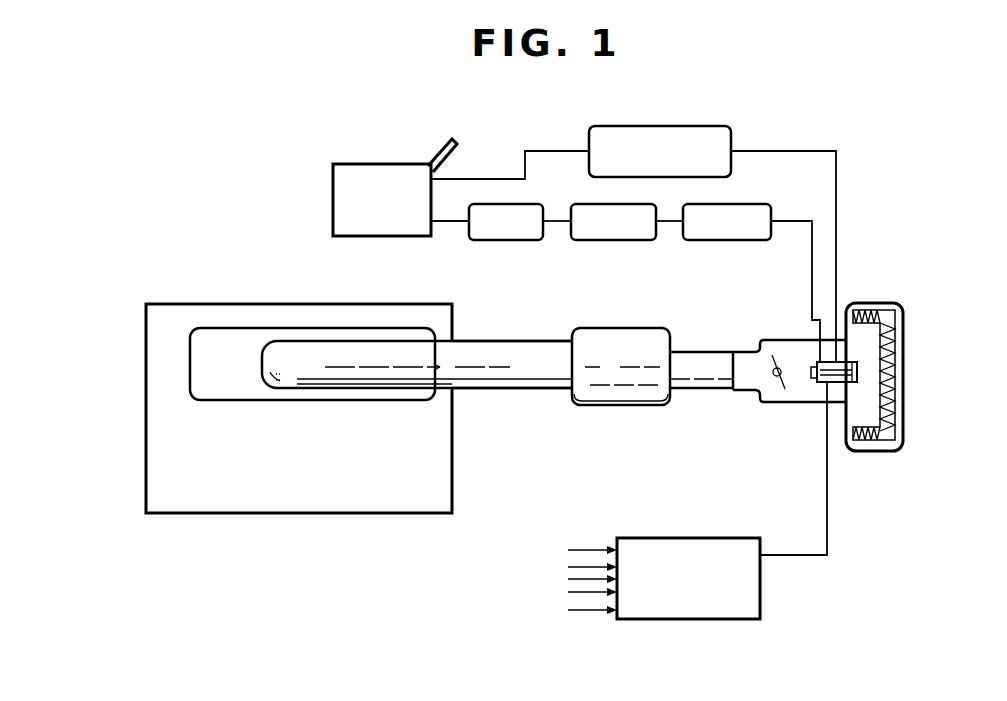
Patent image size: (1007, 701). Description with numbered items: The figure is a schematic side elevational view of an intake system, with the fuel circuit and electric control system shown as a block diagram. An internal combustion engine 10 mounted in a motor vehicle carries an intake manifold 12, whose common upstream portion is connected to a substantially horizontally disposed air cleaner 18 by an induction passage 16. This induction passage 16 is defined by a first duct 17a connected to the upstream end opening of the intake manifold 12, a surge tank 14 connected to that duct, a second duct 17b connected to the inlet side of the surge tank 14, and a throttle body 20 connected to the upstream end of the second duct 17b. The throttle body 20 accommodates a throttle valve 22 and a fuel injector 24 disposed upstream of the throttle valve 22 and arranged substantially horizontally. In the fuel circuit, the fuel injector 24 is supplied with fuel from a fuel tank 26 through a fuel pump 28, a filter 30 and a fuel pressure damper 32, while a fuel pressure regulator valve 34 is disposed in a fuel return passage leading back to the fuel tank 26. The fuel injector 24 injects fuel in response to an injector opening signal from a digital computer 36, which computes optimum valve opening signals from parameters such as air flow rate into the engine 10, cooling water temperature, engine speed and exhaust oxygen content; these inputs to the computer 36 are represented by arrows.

The internal combustion engine 10 is at (210, 304).
The intake manifold 12 is at (397, 328).
The surge tank 14 is at (620, 405).
The induction passage 16 is at (493, 355).
The first duct 17a is at (548, 340).
The second duct 17b is at (695, 352).
The air cleaner 18 is at (884, 303).
The throttle body 20 is at (781, 340).
The throttle valve 22 is at (783, 392).
The fuel injector 24 is at (820, 383).
The fuel tank 26 is at (397, 164).
The fuel pump 28 is at (516, 240).
The filter 30 is at (630, 240).
The fuel pressure damper 32 is at (742, 240).
The fuel pressure regulator valve 34 is at (734, 124).
The digital computer 36 is at (760, 610).